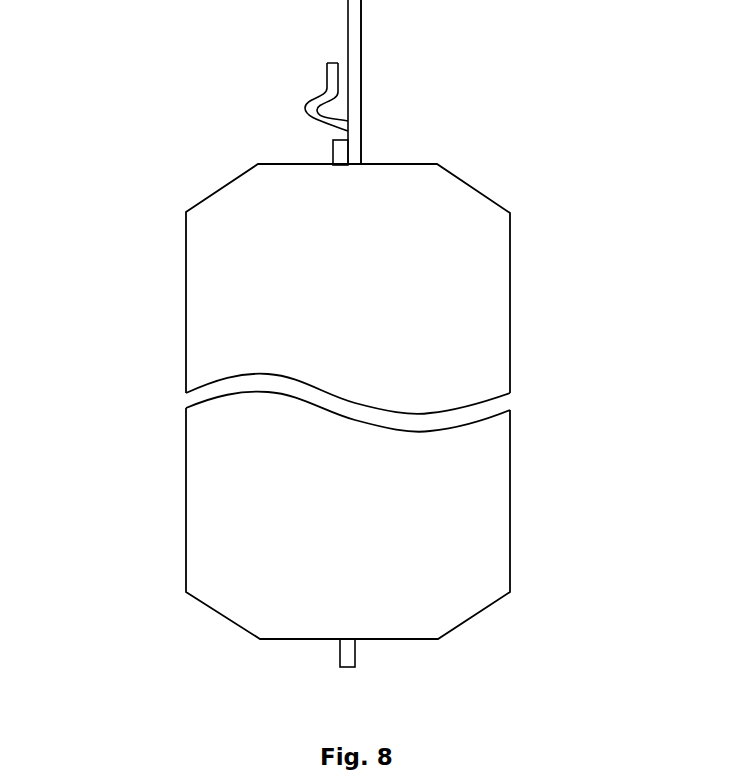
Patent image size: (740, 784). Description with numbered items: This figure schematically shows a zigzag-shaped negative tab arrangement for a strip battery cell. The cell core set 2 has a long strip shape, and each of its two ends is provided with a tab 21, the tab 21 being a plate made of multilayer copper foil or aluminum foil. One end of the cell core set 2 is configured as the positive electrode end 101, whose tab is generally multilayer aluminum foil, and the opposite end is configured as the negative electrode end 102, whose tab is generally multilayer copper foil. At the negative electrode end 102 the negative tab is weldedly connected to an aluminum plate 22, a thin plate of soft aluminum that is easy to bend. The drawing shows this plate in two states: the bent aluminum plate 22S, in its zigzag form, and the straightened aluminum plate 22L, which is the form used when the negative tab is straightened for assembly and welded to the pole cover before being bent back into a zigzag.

The cell core set 2 is at (477, 288).
The tab 21 is at (333, 150).
The aluminum plate 22 is at (378, 100).
The bent aluminum plate 22S is at (328, 63).
The straightened aluminum plate 22L is at (362, 44).
The positive electrode end 101 is at (233, 668).
The negative electrode end 102 is at (400, 140).